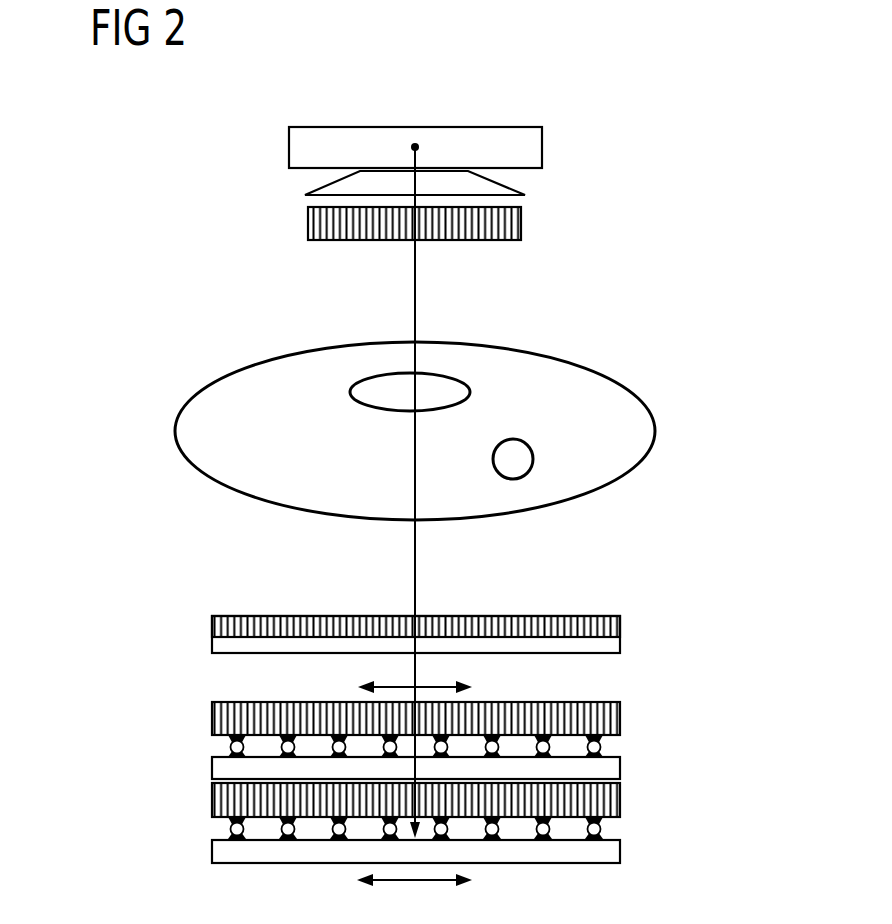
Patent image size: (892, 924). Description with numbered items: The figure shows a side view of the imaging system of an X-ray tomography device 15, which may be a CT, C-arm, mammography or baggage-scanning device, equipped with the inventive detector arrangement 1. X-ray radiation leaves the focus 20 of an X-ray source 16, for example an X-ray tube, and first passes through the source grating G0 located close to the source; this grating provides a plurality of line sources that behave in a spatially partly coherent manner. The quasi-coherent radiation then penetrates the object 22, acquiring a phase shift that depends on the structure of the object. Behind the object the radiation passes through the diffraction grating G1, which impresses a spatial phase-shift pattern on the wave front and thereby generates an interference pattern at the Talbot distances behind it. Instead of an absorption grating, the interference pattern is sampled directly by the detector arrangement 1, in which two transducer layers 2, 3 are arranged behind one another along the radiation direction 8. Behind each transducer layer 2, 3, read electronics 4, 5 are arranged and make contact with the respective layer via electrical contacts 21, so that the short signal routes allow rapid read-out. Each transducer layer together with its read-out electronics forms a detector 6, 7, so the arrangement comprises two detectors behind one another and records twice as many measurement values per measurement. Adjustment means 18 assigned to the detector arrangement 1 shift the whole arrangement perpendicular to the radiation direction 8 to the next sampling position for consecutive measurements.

The detector arrangement 1 is at (741, 710).
The first transducer layer 2 is at (200, 714).
The second transducer layer 3 is at (200, 797).
The read electronics 4 is at (211, 770).
The read electronics 5 is at (211, 852).
The detector 6 is at (635, 702).
The detector 7 is at (635, 783).
The radiation direction 8 is at (417, 563).
The X-ray tomography device 15 is at (158, 292).
The X-ray source 16 is at (592, 122).
The adjustment means 18 is at (437, 687).
The focus 20 is at (415, 142).
The electrical contacts 21 is at (232, 748).
The object 22 is at (656, 431).
The source grating G0 is at (522, 222).
The diffraction grating G1 is at (621, 628).